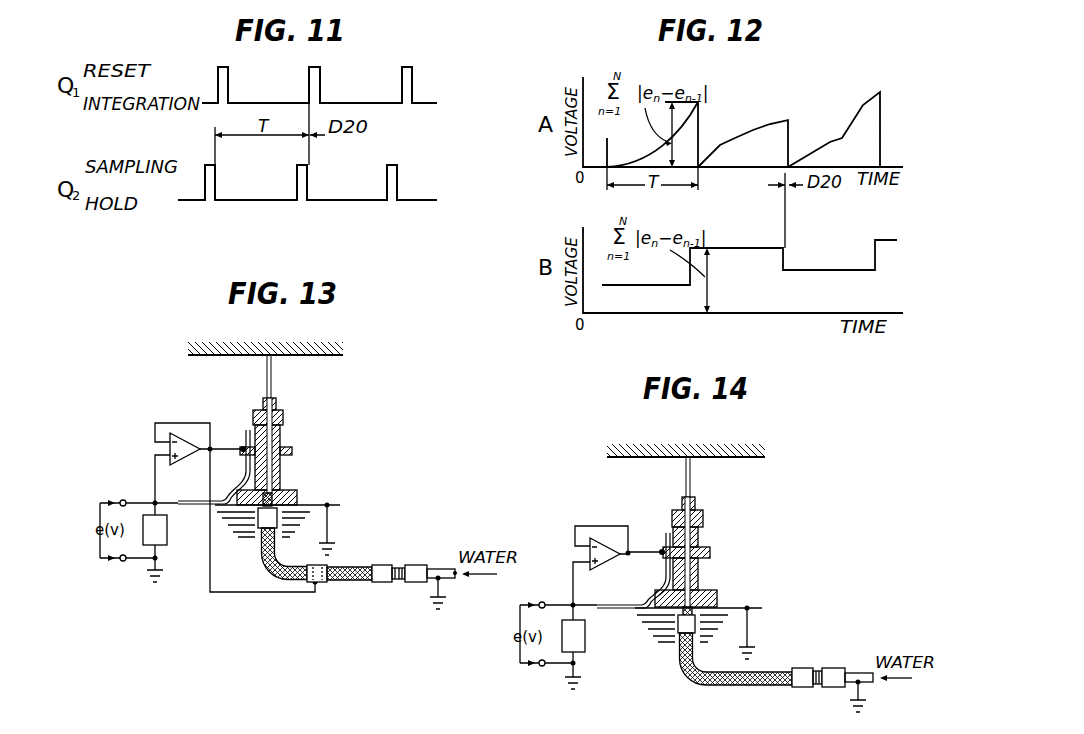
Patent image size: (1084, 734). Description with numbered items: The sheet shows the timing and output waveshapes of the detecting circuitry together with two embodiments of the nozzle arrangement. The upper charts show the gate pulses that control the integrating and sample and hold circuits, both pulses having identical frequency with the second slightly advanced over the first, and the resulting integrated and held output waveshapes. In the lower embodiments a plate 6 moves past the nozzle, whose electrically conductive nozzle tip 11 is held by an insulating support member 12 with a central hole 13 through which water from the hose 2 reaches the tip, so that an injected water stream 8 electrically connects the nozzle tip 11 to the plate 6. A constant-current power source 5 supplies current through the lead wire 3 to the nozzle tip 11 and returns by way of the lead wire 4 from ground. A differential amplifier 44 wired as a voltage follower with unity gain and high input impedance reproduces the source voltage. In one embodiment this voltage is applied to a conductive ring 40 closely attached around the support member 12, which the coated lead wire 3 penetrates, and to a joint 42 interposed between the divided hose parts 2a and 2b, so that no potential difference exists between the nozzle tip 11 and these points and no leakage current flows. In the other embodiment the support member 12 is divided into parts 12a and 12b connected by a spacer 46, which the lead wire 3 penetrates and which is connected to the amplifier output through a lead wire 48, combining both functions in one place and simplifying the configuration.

In FIG. 14, the hose 2 is at (763, 672).
In FIG. 13, the divided part of the hose 2a is at (279, 566).
In FIG. 13, the divided part of the hose 2b is at (350, 568).
In FIG. 13, the lead wire 3 is at (246, 467).
In FIG. 14, the lead wire 3 is at (662, 578).
In FIG. 13, the lead wire 4 is at (158, 552).
In FIG. 14, the lead wire 4 is at (577, 655).
In FIG. 13, the constant-current power source 5 is at (167, 532).
In FIG. 14, the constant-current power source 5 is at (585, 637).
In FIG. 13, the plate 6 is at (313, 347).
In FIG. 14, the plate 6 is at (740, 448).
In FIG. 13, the injected water stream 8 is at (273, 377).
In FIG. 14, the injected water stream 8 is at (692, 478).
In FIG. 13, the nozzle tip 11 is at (283, 417).
In FIG. 14, the nozzle tip 11 is at (703, 517).
In FIG. 13, the support member 12 is at (282, 478).
In FIG. 14, the part of the support member 12a is at (700, 533).
In FIG. 14, the part of the support member 12b is at (700, 590).
In FIG. 13, the hole 13 is at (272, 435).
In FIG. 13, the ring 40 is at (292, 451).
In FIG. 13, the joint 42 is at (315, 582).
In FIG. 13, the differential amplifier 44 is at (187, 460).
In FIG. 14, the differential amplifier 44 is at (603, 565).
In FIG. 14, the spacer 46 is at (712, 553).
In FIG. 14, the lead wire 48 is at (643, 552).